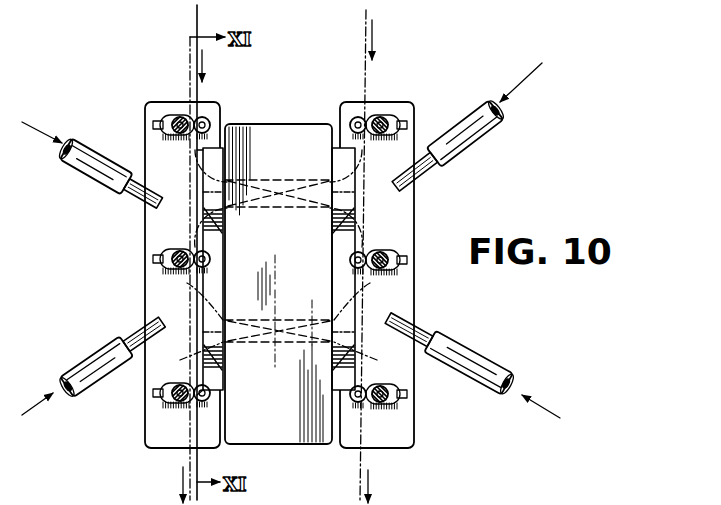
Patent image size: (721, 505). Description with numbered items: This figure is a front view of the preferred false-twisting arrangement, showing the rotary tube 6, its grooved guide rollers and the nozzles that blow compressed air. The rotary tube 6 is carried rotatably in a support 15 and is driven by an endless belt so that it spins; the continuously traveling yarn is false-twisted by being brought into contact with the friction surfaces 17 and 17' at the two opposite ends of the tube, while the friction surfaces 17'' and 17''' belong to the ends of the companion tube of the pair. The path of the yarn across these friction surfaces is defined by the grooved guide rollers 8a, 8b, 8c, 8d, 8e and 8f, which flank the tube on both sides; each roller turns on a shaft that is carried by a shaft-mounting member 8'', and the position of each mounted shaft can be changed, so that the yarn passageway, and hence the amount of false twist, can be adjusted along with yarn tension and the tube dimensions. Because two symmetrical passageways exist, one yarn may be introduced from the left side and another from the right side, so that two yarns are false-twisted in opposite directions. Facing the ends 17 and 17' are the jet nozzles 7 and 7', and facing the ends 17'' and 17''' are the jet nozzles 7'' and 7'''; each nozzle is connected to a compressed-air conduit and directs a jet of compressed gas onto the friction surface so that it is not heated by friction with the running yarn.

The rotary tube 6 is at (199, 288).
The jet nozzle 7 is at (94, 167).
The jet nozzle 7' is at (465, 129).
The jet nozzle 7'' is at (95, 362).
The jet nozzle 7''' is at (471, 363).
The shaft-mounting member 8'' is at (160, 273).
The grooved guide roller 8a is at (212, 122).
The grooved guide roller 8b is at (386, 112).
The grooved guide roller 8c is at (203, 250).
The grooved guide roller 8d is at (390, 243).
The grooved guide roller 8e is at (150, 404).
The grooved guide roller 8f is at (407, 421).
The support 15 is at (298, 130).
The friction surface 17 is at (196, 198).
The friction surface 17' is at (360, 198).
The friction surface 17'' is at (188, 327).
The friction surface 17''' is at (367, 321).